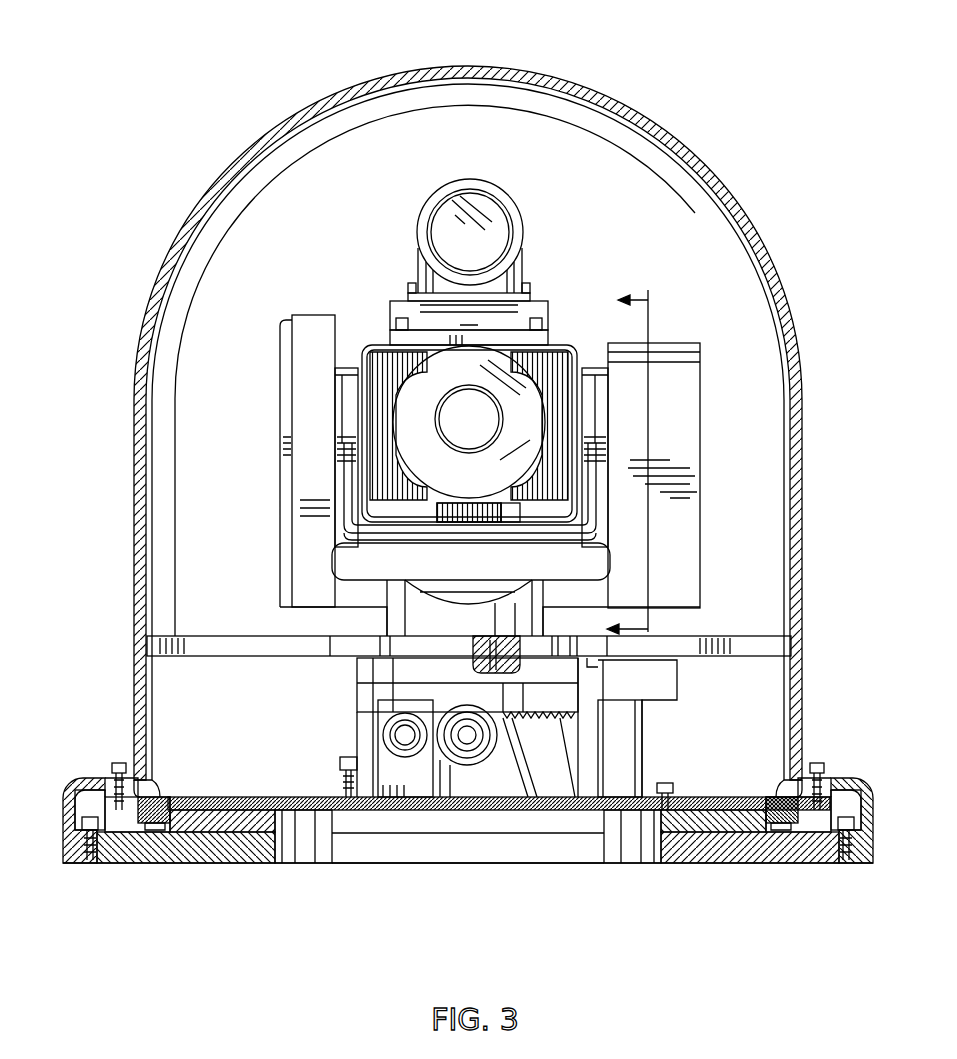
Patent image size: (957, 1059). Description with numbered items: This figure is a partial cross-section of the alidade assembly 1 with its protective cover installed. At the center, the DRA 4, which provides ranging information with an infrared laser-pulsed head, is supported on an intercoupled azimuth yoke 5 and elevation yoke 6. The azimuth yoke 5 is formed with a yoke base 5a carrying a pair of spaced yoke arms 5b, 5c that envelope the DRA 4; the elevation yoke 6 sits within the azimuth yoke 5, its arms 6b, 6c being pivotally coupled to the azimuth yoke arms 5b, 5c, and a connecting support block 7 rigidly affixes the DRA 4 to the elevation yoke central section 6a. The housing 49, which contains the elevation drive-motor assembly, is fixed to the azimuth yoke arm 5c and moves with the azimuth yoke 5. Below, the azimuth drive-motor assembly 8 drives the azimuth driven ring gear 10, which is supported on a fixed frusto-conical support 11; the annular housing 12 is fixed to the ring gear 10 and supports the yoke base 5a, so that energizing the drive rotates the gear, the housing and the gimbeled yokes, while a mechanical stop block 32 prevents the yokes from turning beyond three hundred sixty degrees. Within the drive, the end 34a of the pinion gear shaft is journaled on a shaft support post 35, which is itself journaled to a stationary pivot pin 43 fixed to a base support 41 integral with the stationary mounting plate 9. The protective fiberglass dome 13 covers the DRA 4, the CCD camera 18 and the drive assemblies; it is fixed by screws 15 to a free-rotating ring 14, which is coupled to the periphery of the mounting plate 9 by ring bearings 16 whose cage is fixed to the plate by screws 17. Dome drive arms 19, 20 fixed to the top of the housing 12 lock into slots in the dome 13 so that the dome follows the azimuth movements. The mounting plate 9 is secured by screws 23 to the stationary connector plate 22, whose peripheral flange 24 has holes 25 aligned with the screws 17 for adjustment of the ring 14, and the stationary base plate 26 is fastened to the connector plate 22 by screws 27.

The alidade assembly 1 is at (662, 113).
The DRA 4 is at (385, 348).
The azimuth yoke 5 is at (305, 573).
The yoke base 5a is at (445, 615).
The azimuth yoke arm 5b is at (313, 468).
The azimuth yoke arm 5c is at (640, 445).
The elevation yoke 6 is at (570, 527).
The elevation yoke central section 6a is at (388, 525).
The elevation yoke arm 6b is at (348, 405).
The elevation yoke arm 6c is at (592, 408).
The connecting support block 7 is at (478, 520).
The azimuth drive-motor assembly 8 is at (368, 735).
The mounting plate 9 is at (395, 780).
The azimuth driven ring gear 10 is at (548, 750).
The frusto-conical support 11 is at (600, 797).
The annular housing 12 is at (565, 673).
The protective fiberglass dome 13 is at (745, 216).
The free-rotating ring 14 is at (160, 790).
The screws 15 is at (118, 772).
The ring bearings 16 is at (205, 798).
The screws 17 is at (175, 800).
The CCD camera 18 is at (495, 232).
The dome drive arm 19 is at (200, 636).
The dome drive arm 20 is at (755, 648).
The connector plate 22 is at (245, 835).
The screws 23 is at (198, 795).
The peripheral flange 24 is at (105, 835).
The holes 25 is at (152, 845).
The base plate 26 is at (845, 855).
The screws 27 is at (92, 800).
The mechanical stop block 32 is at (633, 730).
The end of pinion gear shaft 34a is at (467, 745).
The shaft support post 35 is at (405, 745).
The base support 41 is at (520, 760).
The pivot pin 43 is at (483, 745).
The housing 49 is at (685, 415).